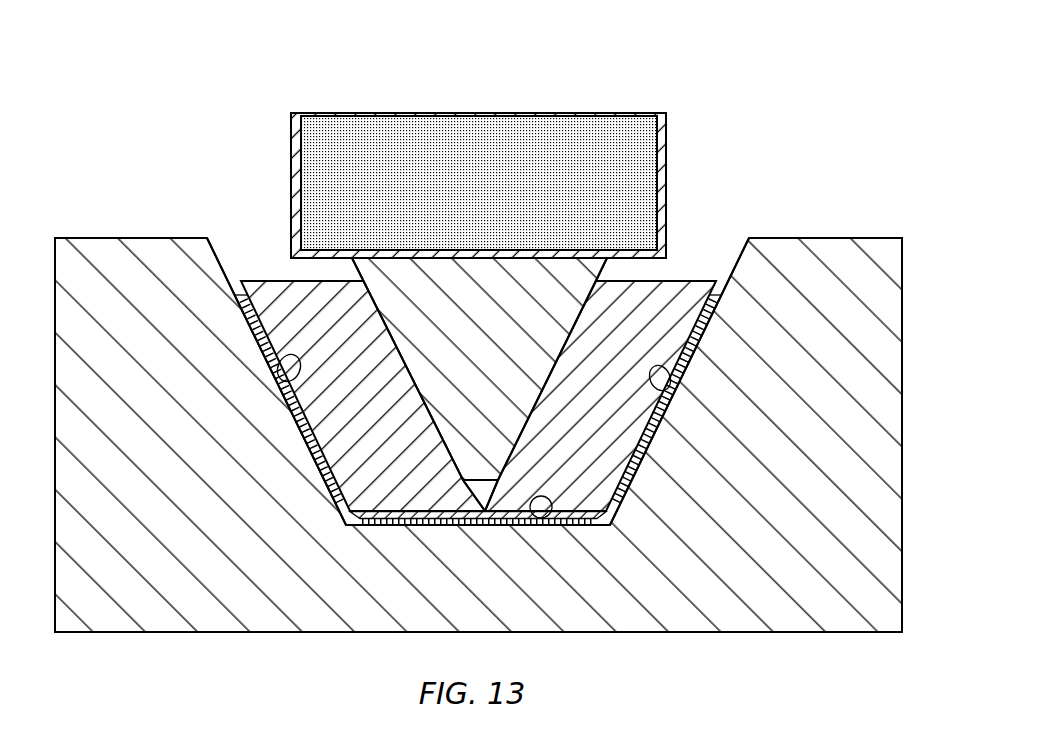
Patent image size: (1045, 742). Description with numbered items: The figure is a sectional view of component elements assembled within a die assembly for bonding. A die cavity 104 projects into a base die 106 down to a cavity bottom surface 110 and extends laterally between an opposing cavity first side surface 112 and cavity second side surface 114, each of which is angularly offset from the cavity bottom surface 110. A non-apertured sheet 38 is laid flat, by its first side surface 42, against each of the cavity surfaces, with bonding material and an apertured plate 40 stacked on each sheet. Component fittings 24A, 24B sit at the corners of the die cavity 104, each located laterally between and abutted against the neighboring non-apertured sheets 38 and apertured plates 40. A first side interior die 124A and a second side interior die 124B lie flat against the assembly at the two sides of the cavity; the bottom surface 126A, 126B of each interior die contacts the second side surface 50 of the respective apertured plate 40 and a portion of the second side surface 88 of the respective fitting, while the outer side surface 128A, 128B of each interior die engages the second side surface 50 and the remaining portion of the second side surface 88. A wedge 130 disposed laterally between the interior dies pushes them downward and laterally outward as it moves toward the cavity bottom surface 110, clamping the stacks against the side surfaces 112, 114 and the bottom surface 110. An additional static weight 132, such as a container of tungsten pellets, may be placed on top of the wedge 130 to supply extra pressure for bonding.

The base die 106 is at (868, 236).
The cavity first side surface 112 is at (218, 257).
The cavity second side surface 114 is at (735, 250).
The die cavity 104 is at (700, 252).
The additional static weight 132 is at (663, 110).
The wedge 130 is at (460, 256).
The outer side surface of first side interior die 128A is at (305, 455).
The outer side surface of second side interior die 128B is at (653, 447).
The first side interior die 124A is at (307, 277).
The second side interior die 124B is at (650, 278).
The apertured plate 40 is at (243, 325).
The first side surface of non-apertured sheet 42 is at (303, 417).
The second side surface of apertured plate 50 is at (278, 372).
The non-apertured sheet 38 is at (310, 481).
The second side surface of component fitting 88 is at (348, 493).
The cavity bottom surface 110 is at (430, 525).
The component fitting 24A is at (348, 530).
The component fitting 24B is at (607, 530).
The bottom surface of first side interior die 126A is at (457, 525).
The bottom surface of second side interior die 126B is at (567, 527).